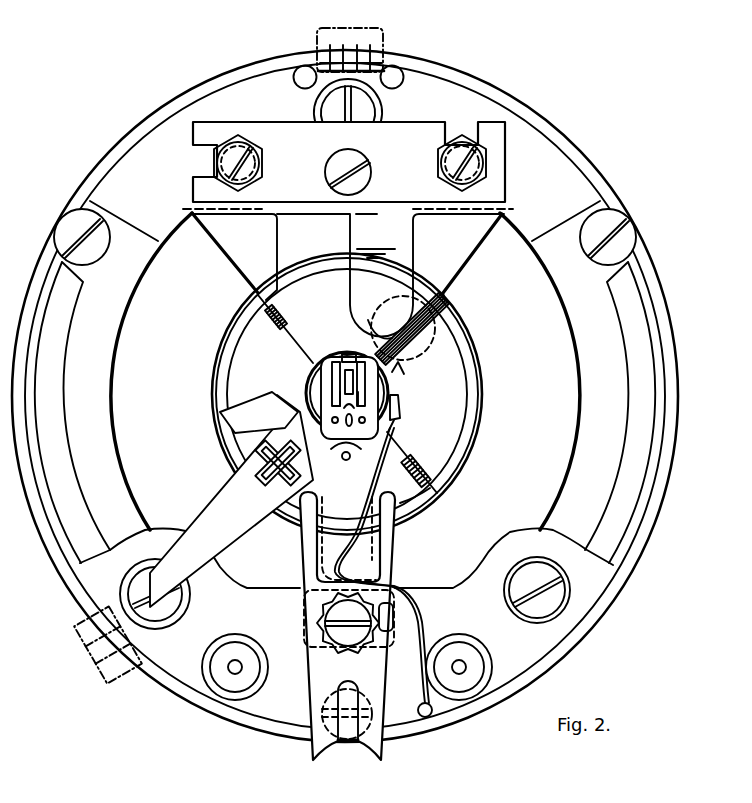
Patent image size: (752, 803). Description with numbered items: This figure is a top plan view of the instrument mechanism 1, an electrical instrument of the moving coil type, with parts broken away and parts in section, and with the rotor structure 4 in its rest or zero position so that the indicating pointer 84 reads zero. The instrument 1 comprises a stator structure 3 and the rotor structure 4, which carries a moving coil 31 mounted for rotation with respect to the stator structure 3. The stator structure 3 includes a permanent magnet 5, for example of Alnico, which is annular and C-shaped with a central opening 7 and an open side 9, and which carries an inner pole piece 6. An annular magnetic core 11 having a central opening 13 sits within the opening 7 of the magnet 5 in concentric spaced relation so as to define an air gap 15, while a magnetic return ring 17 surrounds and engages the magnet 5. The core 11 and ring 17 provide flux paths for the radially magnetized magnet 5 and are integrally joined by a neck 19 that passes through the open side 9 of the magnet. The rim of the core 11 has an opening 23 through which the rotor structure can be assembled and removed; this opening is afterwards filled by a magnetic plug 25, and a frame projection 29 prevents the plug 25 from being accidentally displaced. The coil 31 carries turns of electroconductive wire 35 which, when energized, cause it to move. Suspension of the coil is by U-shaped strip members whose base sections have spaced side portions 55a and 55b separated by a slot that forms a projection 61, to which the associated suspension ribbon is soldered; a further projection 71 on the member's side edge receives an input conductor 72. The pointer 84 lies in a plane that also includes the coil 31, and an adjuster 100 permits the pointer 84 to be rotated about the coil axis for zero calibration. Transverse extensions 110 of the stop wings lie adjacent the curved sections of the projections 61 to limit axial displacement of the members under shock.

The instrument mechanism 1 is at (659, 588).
The stator structure 3 is at (609, 606).
The rotor structure 4 is at (436, 297).
The permanent magnet 5 is at (479, 250).
The inner pole piece 6 is at (469, 440).
The central opening 7 is at (483, 399).
The open side 9 is at (236, 245).
The magnetic core 11 is at (445, 454).
The central opening 13 is at (397, 415).
The air gap 15 is at (415, 510).
The magnetic return ring 17 is at (568, 481).
The neck 19 is at (284, 255).
The opening 23 is at (436, 350).
The magnetic plug 25 is at (397, 368).
The projections 29 is at (353, 273).
The coil 31 is at (372, 340).
The electroconductive wire 35 is at (418, 334).
The side portion 55a is at (395, 392).
The side portion 55b is at (318, 388).
The projection 61 is at (331, 422).
The projection 71 is at (391, 398).
The input conductors 72 is at (390, 467).
The indicating pointer 84 is at (228, 530).
The adjuster 100 is at (262, 432).
The transverse extensions 110 is at (393, 430).